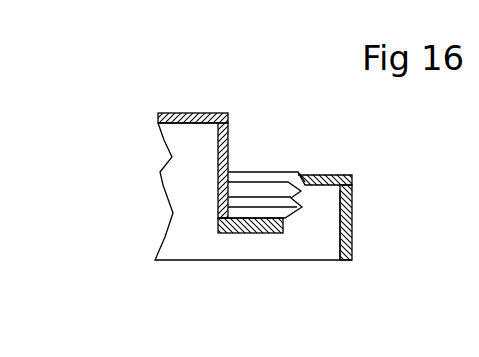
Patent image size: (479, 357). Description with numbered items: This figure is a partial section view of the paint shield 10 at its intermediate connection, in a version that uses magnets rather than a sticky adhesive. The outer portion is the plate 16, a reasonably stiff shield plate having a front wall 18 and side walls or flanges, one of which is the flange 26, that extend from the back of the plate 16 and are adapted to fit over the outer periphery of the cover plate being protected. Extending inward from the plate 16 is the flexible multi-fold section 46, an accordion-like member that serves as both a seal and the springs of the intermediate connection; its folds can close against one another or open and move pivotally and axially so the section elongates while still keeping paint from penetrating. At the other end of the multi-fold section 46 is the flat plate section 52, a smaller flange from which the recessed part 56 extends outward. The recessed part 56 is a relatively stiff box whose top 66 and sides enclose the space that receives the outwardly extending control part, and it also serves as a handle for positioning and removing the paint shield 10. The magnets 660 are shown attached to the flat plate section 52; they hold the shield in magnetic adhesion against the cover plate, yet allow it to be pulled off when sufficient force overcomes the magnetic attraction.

The paint shield 10 is at (202, 108).
The recessed part 56 is at (160, 108).
The top 66 is at (185, 124).
The flat plate section 52 is at (220, 220).
The flexible multi-fold section 46 is at (243, 184).
The front wall 18 is at (313, 173).
The plate 16 is at (343, 173).
The side wall or flange 26 is at (350, 222).
The magnets 660 is at (265, 238).